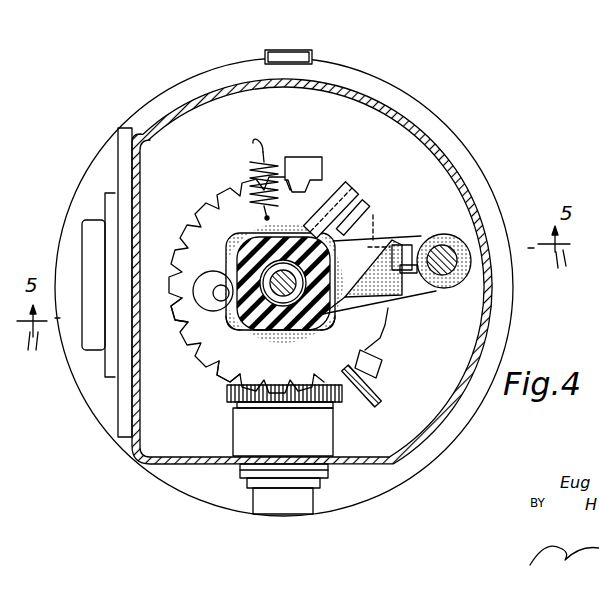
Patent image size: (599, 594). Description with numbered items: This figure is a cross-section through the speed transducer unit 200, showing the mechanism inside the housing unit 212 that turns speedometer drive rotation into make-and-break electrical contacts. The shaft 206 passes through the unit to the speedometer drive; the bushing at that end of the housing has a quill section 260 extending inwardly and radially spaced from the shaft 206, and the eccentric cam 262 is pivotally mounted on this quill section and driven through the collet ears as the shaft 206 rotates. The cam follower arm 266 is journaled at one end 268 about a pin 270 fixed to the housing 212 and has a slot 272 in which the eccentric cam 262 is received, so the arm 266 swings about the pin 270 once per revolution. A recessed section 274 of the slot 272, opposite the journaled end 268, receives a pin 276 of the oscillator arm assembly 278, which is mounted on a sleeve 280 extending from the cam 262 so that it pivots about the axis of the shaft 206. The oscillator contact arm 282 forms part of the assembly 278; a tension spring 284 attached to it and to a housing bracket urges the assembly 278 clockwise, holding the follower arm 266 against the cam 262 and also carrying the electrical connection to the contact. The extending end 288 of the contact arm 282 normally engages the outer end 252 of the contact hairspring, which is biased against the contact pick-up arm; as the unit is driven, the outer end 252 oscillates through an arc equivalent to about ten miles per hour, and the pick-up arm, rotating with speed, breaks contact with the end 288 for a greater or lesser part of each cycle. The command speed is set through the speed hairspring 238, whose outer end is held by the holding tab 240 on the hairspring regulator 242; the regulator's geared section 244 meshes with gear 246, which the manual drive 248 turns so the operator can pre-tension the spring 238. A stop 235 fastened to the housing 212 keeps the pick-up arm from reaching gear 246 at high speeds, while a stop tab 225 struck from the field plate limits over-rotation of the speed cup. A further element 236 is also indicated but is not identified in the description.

The speed transducer unit 200 is at (386, 97).
The housing unit 212 is at (171, 108).
The spring hook 236 is at (258, 148).
The tension spring 284 is at (250, 178).
The stop tab 225 is at (288, 160).
The speed hairspring holding tab 240 is at (338, 183).
The oscillator arm assembly 278 is at (330, 213).
The eccentric cam 262 is at (250, 240).
The shaft 206 is at (240, 250).
The pin 276 is at (197, 262).
The recessed section 274 is at (192, 312).
The quill section 260 is at (197, 366).
The geared section 244 is at (222, 378).
The gear 246 is at (227, 402).
The manual drive 248 is at (276, 503).
The cam follower arm 266 is at (252, 327).
The slot 272 is at (307, 322).
The speed hairspring 238 is at (343, 240).
The sleeve 280 is at (340, 295).
The outer end of contact hairspring 252 is at (402, 272).
The oscillator contact arm 282 is at (377, 224).
The extending end 288 is at (398, 245).
The pin 270 is at (441, 246).
The journaled end 268 is at (436, 285).
The hairspring regulator 242 is at (372, 336).
The stop 235 is at (372, 392).